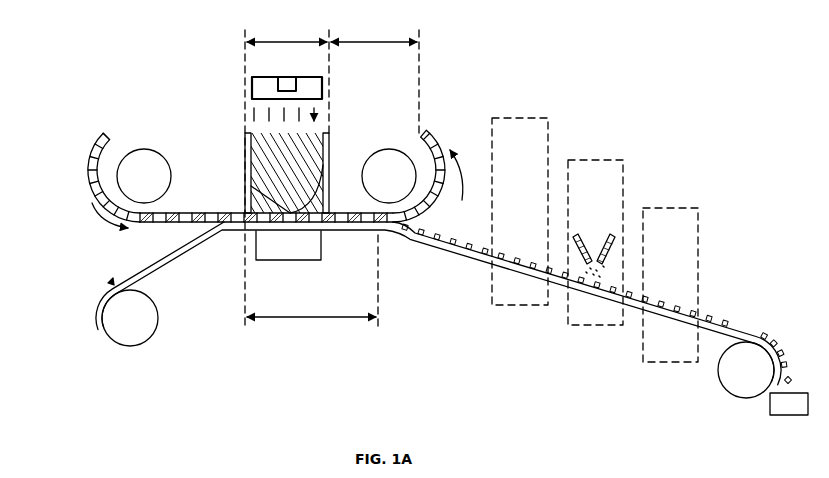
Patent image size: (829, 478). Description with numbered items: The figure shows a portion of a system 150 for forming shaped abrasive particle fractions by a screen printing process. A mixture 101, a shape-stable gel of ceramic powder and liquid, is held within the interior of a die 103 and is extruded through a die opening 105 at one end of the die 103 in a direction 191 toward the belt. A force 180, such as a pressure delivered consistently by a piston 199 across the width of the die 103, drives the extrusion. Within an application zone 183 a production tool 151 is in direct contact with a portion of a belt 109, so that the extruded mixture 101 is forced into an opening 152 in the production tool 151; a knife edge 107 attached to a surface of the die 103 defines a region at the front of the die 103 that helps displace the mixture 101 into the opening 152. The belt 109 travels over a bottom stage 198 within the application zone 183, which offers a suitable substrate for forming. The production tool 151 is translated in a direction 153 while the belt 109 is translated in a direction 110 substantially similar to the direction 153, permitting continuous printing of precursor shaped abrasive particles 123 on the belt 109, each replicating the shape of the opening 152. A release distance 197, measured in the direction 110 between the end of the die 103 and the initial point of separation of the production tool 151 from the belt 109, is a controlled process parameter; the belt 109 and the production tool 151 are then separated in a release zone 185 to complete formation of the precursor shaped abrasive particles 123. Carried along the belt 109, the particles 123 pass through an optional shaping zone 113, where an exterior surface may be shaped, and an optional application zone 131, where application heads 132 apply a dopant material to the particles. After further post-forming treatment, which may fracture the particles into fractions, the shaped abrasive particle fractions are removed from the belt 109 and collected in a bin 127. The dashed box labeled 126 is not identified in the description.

The system 150 is at (41, 89).
The application zone 183 is at (287, 172).
The release zone 185 is at (375, 74).
The release distance 197 is at (312, 285).
The piston 199 is at (270, 90).
The force 180 is at (314, 120).
The die opening 105 is at (246, 140).
The production tool 151 is at (246, 172).
The die 103 is at (329, 140).
The knife edge 107 is at (331, 200).
The mixture 101 is at (306, 158).
The direction 191 is at (293, 211).
The opening 152 is at (162, 223).
The direction 153 is at (98, 215).
The direction 110 is at (97, 300).
The belt 109 is at (168, 273).
The bottom stage 198 is at (268, 262).
The precursor shaped abrasive particles 123 is at (437, 240).
The shaping zone 113 is at (520, 118).
The application zone 131 is at (598, 160).
The application heads 132 is at (580, 236).
The curing station 126 is at (670, 208).
The bin 127 is at (778, 406).